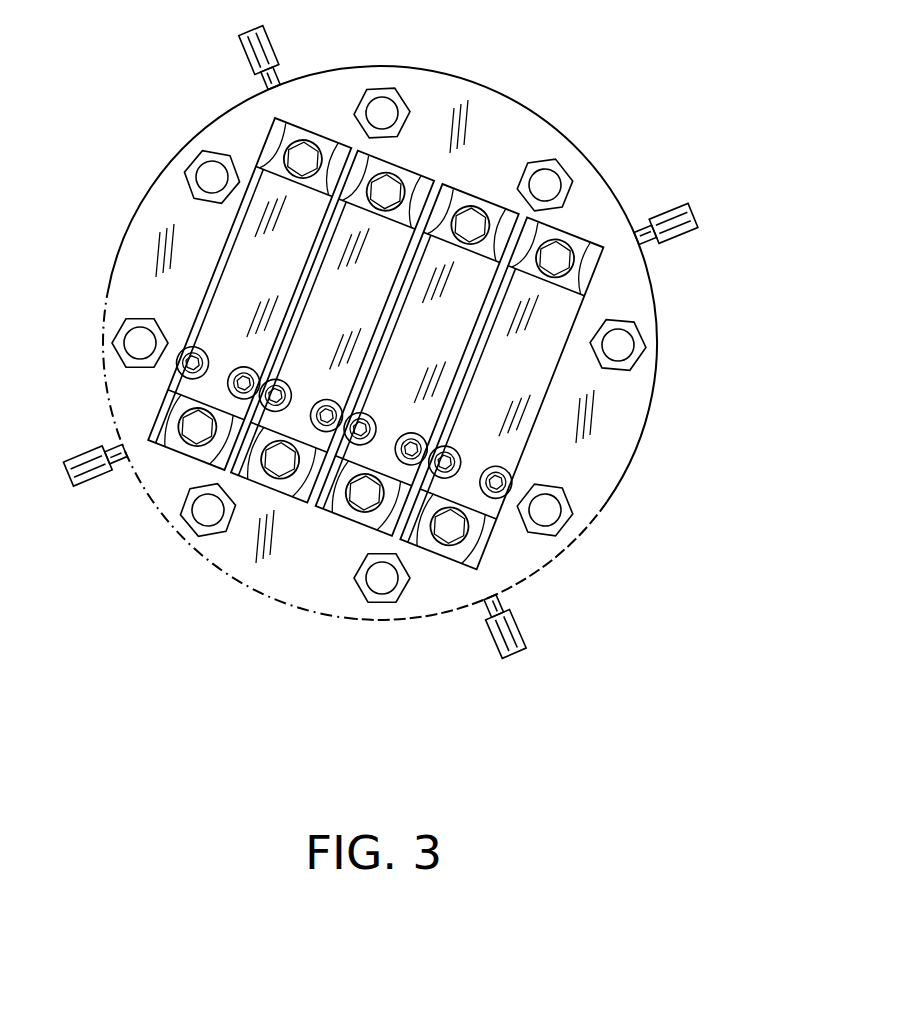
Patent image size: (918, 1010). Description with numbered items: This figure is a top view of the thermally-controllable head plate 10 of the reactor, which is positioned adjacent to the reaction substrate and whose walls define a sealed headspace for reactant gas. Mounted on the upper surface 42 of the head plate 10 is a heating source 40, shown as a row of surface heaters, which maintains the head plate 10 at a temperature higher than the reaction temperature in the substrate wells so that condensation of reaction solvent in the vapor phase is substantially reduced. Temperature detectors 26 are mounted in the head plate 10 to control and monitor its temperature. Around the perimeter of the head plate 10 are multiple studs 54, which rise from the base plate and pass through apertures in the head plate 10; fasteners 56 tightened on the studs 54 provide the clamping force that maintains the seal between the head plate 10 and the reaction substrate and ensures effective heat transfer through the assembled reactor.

The head plate 10 is at (625, 475).
The temperature detector 26 is at (692, 205).
The heating source 40 is at (557, 318).
The upper surface 42 is at (585, 483).
The stud 54 is at (618, 345).
The fastener 56 is at (630, 368).